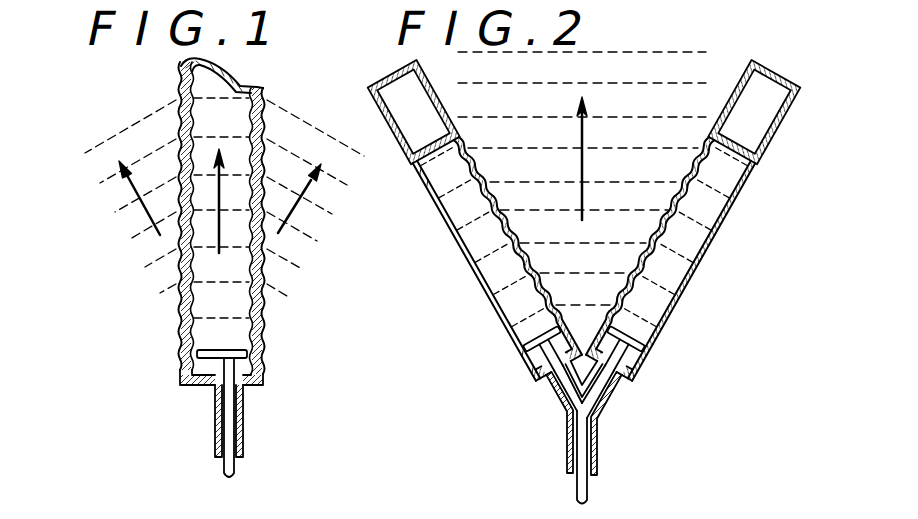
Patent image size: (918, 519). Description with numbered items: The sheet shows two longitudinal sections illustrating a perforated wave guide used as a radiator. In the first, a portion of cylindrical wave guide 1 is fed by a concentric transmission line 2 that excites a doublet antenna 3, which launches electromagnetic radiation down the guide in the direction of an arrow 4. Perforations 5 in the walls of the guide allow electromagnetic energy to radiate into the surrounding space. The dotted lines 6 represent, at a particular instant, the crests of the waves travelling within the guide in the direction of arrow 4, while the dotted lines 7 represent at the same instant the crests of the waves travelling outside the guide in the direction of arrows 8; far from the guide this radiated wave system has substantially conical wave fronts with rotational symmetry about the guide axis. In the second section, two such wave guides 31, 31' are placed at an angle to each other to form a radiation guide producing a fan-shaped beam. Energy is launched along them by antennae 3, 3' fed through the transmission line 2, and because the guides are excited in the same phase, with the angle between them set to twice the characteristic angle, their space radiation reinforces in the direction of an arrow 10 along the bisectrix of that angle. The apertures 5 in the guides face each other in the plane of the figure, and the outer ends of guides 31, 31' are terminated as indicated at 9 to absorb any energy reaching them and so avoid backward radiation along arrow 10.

In FIG. 1, the cylindrical wave guide 1 is at (180, 358).
In FIG. 1, the concentric transmission line 2 is at (215, 432).
In FIG. 2, the concentric transmission line 2 is at (567, 436).
In FIG. 1, the doublet antenna 3 is at (222, 398).
In FIG. 2, the doublet antenna 3 is at (550, 366).
In FIG. 2, the antenna 3' is at (613, 368).
In FIG. 1, the arrow 4 is at (221, 220).
In FIG. 1, the perforations 5 is at (178, 262).
In FIG. 2, the perforations 5 is at (501, 208).
In FIG. 1, the dotted lines 6 is at (207, 283).
In FIG. 1, the dotted lines 7 is at (96, 156).
In FIG. 1, the arrows 8 is at (146, 221).
In FIG. 2, the termination 9 is at (396, 105).
In FIG. 2, the arrow 10 is at (584, 133).
In FIG. 2, the wave guide 31 is at (476, 271).
In FIG. 2, the wave guide 31' is at (691, 271).